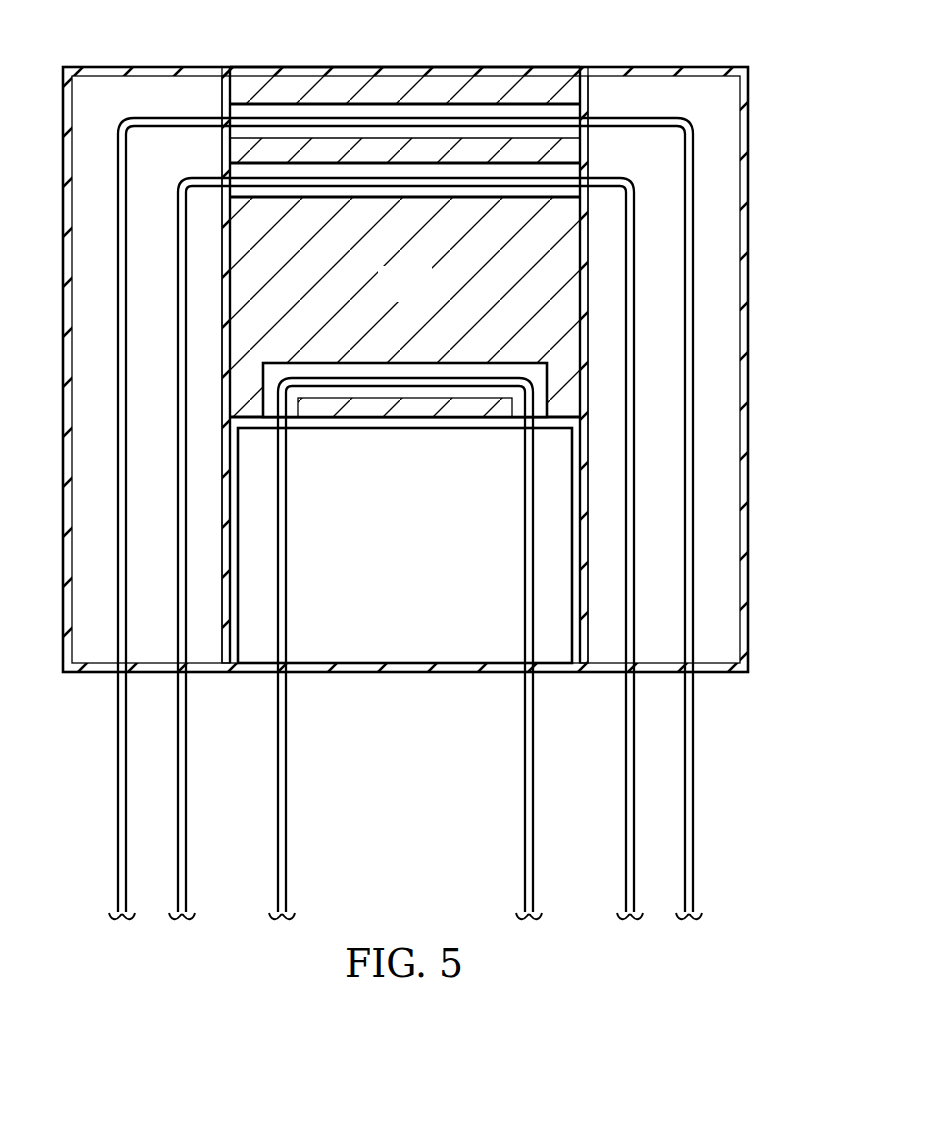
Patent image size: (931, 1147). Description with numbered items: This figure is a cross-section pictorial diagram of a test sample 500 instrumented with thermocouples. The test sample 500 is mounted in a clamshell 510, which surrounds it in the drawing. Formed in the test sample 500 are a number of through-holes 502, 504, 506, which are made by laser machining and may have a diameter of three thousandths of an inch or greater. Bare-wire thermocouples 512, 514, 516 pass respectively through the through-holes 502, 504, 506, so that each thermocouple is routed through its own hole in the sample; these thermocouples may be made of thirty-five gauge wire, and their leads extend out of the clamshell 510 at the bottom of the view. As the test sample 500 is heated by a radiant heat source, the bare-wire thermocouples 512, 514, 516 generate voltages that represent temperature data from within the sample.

The test sample 500 is at (427, 297).
The through-hole 502 is at (315, 113).
The through-hole 504 is at (243, 170).
The through-hole 506 is at (363, 390).
The clamshell 510 is at (742, 218).
The bare-wire thermocouple 512 is at (118, 802).
The bare-wire thermocouple 514 is at (186, 802).
The bare-wire thermocouple 516 is at (533, 802).